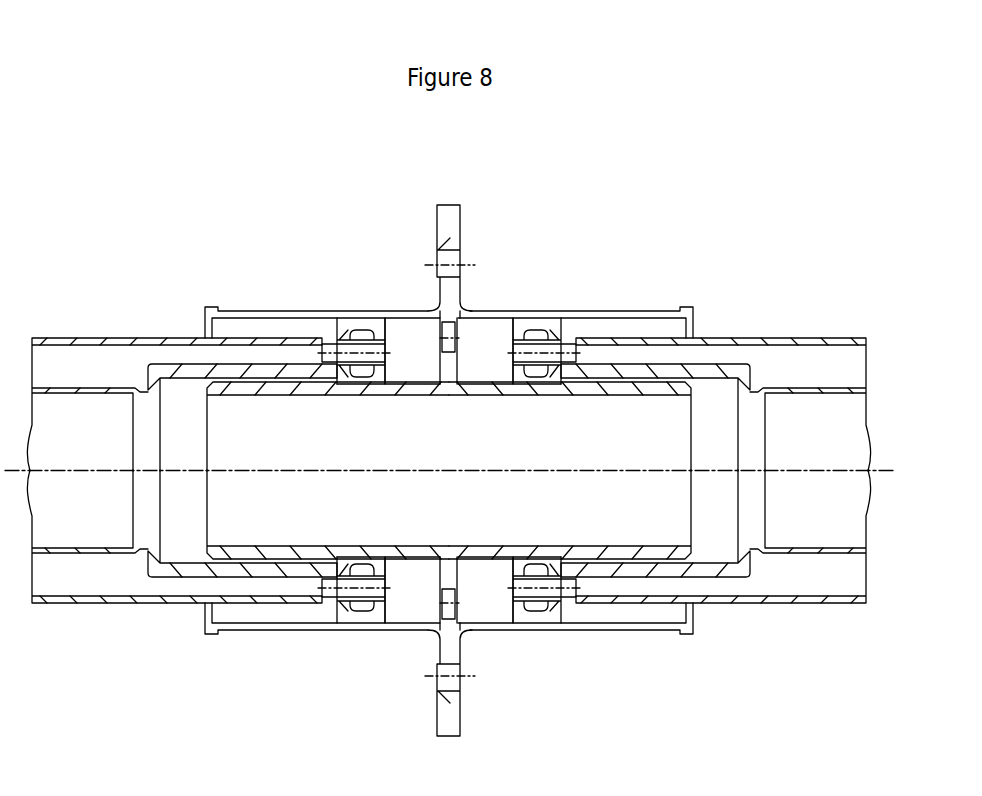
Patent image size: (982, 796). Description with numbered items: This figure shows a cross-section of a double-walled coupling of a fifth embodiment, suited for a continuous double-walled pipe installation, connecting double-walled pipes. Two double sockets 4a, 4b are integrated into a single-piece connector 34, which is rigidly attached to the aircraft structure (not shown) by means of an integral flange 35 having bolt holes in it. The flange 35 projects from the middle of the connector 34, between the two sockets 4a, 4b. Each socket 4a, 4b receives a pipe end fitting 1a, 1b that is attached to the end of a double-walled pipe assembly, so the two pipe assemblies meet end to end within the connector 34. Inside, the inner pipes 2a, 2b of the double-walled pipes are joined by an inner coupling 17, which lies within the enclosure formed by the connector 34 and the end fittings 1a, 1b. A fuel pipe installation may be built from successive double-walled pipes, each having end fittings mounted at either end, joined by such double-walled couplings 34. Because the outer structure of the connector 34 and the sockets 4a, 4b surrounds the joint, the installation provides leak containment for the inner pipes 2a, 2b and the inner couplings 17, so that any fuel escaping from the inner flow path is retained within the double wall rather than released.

The pipe end fitting 1a is at (183, 368).
The pipe end fitting 1b is at (735, 366).
The inner pipe 2a is at (72, 555).
The inner pipe 2b is at (807, 553).
The double socket 4a is at (247, 311).
The double socket 4b is at (532, 311).
The inner coupling 17 is at (268, 553).
The single-piece connector 34 is at (628, 308).
The integral flange 35 is at (436, 226).